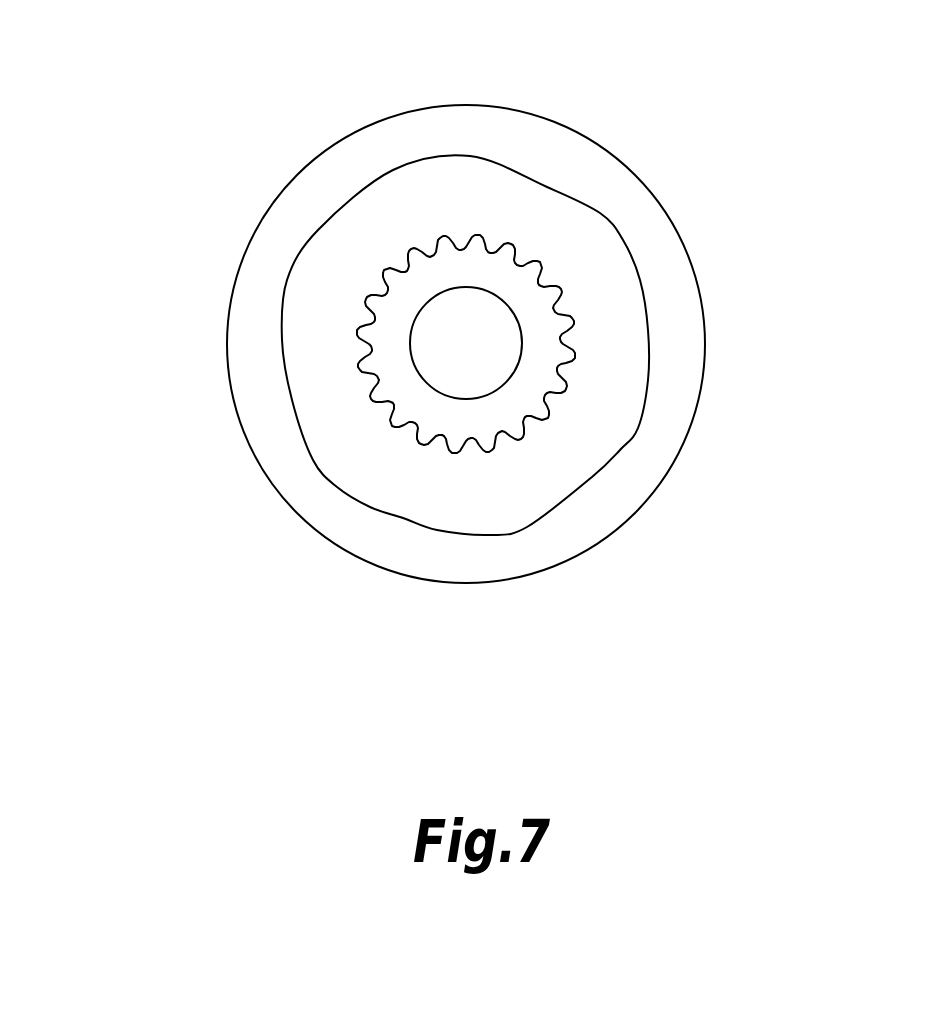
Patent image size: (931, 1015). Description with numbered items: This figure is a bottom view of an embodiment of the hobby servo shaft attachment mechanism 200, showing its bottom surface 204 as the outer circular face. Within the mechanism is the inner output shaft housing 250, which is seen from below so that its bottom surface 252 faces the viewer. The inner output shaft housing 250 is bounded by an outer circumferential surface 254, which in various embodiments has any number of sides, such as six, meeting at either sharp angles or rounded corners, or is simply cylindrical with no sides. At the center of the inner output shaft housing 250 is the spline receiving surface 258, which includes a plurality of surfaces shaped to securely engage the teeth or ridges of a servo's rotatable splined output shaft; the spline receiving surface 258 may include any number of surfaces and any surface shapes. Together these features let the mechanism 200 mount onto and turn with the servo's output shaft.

The hobby servo shaft attachment mechanism 200 is at (262, 632).
The bottom surface 204 is at (267, 268).
The inner output shaft housing 250 is at (541, 173).
The bottom surface 252 is at (600, 382).
The outer circumferential surface 254 is at (595, 475).
The spline receiving surface 258 is at (553, 287).